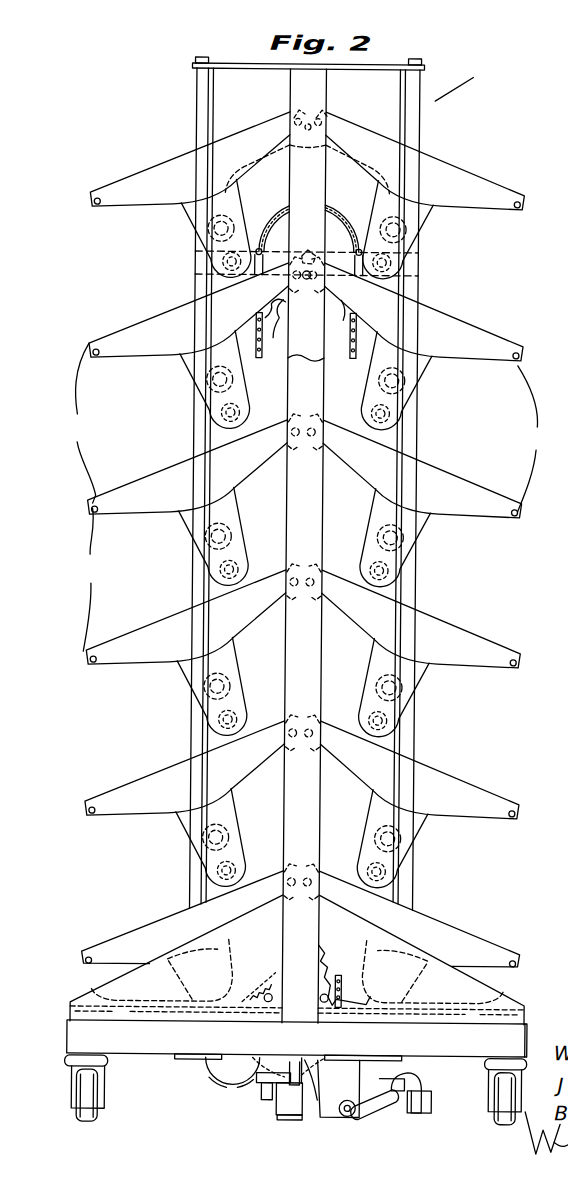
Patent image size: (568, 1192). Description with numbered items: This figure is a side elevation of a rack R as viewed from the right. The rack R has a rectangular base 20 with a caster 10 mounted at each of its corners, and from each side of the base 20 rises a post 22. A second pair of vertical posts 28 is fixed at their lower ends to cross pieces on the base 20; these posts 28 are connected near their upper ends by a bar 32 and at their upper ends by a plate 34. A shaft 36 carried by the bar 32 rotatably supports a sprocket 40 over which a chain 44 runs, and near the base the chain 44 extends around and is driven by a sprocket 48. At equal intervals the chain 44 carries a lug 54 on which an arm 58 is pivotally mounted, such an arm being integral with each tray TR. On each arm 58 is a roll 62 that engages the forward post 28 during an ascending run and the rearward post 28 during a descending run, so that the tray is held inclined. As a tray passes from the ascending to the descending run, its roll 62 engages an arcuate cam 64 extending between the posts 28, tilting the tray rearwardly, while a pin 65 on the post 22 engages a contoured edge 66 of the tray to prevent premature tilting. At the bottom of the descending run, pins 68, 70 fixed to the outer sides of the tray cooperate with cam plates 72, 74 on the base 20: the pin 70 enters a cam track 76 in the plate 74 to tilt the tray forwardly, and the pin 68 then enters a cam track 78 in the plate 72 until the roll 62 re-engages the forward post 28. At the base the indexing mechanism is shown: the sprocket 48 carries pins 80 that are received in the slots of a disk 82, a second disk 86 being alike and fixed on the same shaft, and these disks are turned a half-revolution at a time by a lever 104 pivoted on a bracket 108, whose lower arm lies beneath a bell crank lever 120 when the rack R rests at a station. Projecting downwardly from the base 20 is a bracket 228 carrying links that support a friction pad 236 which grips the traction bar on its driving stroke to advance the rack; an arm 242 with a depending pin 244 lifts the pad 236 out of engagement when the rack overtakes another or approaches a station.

The caster 10 is at (93, 1121).
The rectangular base 20 is at (80, 1042).
The post 22 is at (296, 667).
The vertical post 28 is at (409, 431).
The bar 32 is at (413, 260).
The plate 34 is at (227, 64).
The shaft 36 is at (307, 253).
The sprocket 40 is at (306, 328).
The chain 44 is at (270, 227).
The sprocket 48 is at (331, 975).
The lug 54 is at (222, 407).
The arm 58 is at (422, 364).
The roll 62 is at (208, 371).
The arcuate cam 64 is at (359, 158).
The pin 65 is at (307, 118).
The contoured edge 66 is at (471, 211).
The pin 68 is at (92, 957).
The pin 70 is at (517, 960).
The cam plate 72 is at (137, 972).
The cam plate 74 is at (460, 977).
The cam track 76 is at (505, 1000).
The cam track 78 is at (90, 1004).
The pin 80 is at (275, 993).
The disk 82 is at (220, 1063).
The second disk 86 is at (223, 1082).
The lever 104 is at (389, 1113).
The bracket 108 is at (345, 1120).
The bell crank lever 120 is at (422, 1077).
The bracket 228 is at (324, 1088).
The pad 236 is at (299, 1121).
The arm 242 is at (290, 1100).
The depending pin 244 is at (270, 1093).
The rack R is at (465, 85).
The tray TR is at (81, 423).